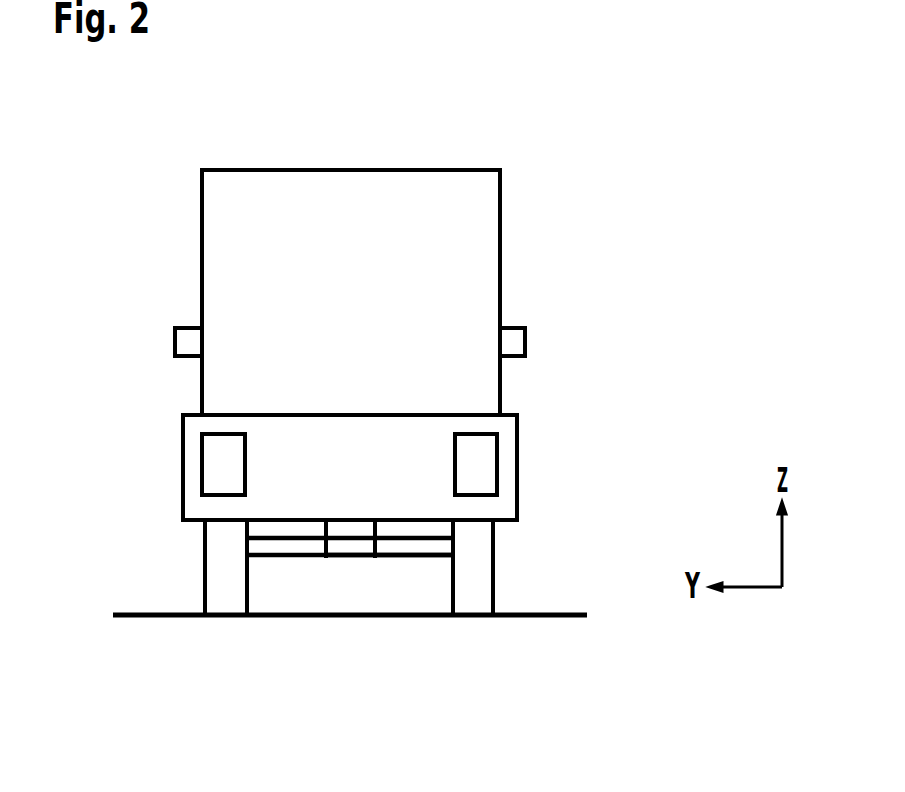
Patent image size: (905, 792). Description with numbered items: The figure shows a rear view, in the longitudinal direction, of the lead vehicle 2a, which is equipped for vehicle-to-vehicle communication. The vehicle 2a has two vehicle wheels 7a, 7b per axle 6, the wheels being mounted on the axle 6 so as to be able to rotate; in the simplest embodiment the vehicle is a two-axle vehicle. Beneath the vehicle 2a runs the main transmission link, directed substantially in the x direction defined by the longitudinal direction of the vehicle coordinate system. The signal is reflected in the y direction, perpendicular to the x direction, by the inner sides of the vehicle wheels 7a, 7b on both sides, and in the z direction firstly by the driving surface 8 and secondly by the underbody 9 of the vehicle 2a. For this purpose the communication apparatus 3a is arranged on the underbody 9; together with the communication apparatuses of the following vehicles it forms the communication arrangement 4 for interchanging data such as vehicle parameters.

The lead vehicle 2a is at (505, 132).
The vehicle wheel 7a is at (225, 595).
The vehicle wheel 7b is at (473, 595).
The underbody 9 is at (288, 523).
The communication apparatus 3a is at (350, 530).
The communication arrangement 4 is at (363, 532).
The axle 6 is at (408, 547).
The driving surface 8 is at (563, 610).